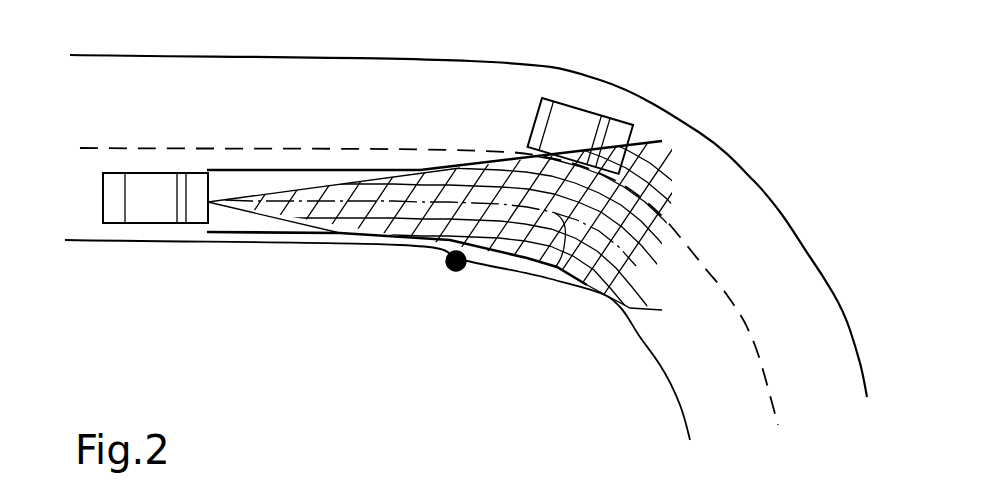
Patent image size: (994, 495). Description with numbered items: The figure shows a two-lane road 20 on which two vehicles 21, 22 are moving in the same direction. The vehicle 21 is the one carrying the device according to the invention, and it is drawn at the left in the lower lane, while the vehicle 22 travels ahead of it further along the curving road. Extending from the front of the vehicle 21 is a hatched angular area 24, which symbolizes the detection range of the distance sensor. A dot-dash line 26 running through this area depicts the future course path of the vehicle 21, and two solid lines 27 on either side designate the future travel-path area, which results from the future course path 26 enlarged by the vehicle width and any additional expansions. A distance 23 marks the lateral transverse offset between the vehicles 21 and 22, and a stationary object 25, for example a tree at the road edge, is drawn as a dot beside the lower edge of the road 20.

The two-lane road 20 is at (747, 168).
The vehicle 21 is at (145, 226).
The vehicle 22 is at (592, 108).
The distance 23 is at (585, 138).
The angular area 24 is at (347, 217).
The stationary object 25 is at (453, 272).
The dot-dash line 26 is at (630, 268).
The solid lines 27 is at (255, 165).